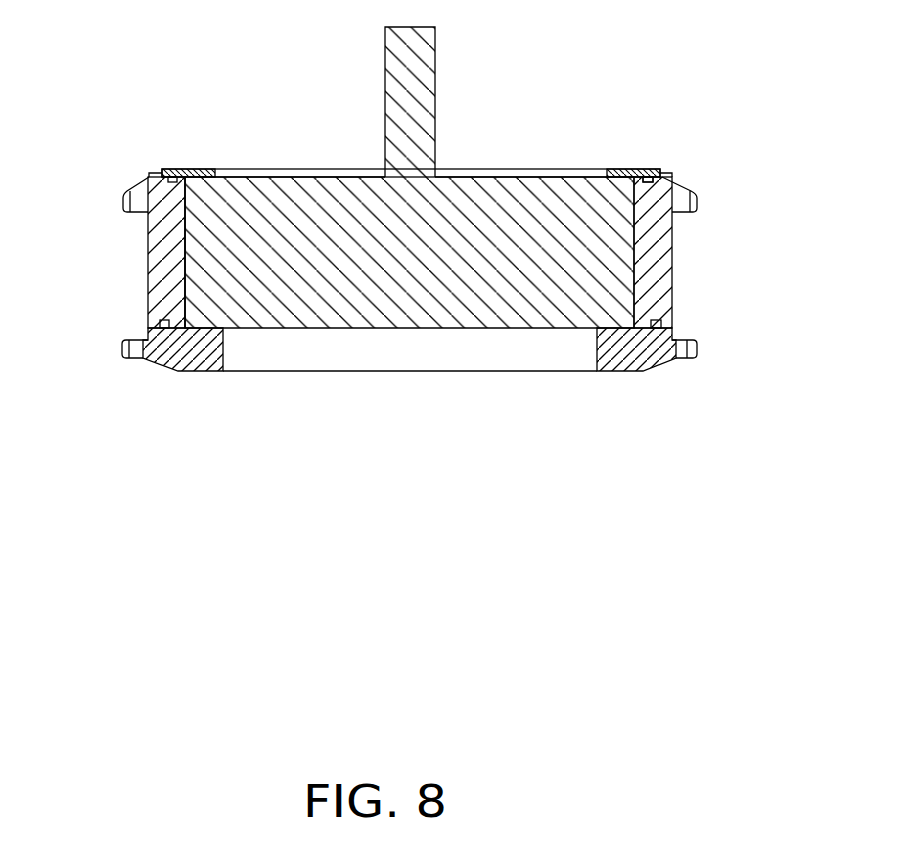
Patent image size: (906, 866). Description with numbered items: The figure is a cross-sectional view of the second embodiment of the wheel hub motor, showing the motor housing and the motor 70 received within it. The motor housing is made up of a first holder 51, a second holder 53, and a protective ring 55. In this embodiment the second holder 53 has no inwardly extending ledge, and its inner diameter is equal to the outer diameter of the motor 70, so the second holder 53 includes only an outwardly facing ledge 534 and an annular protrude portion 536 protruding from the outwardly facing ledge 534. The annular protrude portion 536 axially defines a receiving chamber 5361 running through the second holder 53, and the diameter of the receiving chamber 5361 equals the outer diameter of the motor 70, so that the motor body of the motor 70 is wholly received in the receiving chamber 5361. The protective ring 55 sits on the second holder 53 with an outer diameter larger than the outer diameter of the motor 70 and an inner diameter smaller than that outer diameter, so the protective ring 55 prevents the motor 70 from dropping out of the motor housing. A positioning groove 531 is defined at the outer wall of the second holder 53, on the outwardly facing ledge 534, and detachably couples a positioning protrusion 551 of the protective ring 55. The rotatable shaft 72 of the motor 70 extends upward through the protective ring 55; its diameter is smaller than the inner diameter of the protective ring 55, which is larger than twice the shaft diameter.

The first holder 51 is at (632, 358).
The second holder 53 is at (657, 247).
The positioning groove 531 is at (651, 182).
The outwardly facing ledge 534 is at (148, 177).
The annular protrude portion 536 is at (158, 285).
The receiving chamber 5361 is at (184, 246).
The protective ring 55 is at (620, 170).
The positioning protrusion 551 is at (648, 182).
The motor 70 is at (497, 183).
The rotatable shaft 72 is at (408, 115).